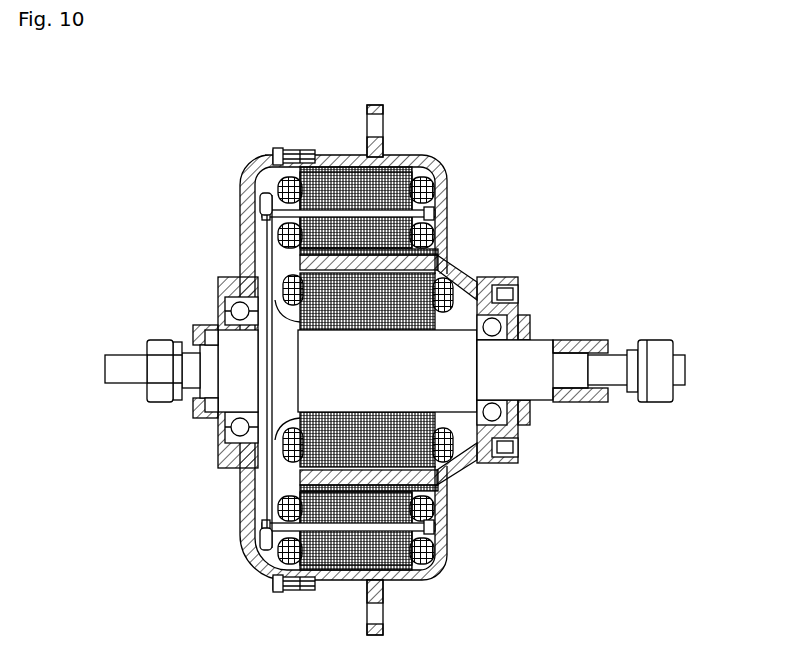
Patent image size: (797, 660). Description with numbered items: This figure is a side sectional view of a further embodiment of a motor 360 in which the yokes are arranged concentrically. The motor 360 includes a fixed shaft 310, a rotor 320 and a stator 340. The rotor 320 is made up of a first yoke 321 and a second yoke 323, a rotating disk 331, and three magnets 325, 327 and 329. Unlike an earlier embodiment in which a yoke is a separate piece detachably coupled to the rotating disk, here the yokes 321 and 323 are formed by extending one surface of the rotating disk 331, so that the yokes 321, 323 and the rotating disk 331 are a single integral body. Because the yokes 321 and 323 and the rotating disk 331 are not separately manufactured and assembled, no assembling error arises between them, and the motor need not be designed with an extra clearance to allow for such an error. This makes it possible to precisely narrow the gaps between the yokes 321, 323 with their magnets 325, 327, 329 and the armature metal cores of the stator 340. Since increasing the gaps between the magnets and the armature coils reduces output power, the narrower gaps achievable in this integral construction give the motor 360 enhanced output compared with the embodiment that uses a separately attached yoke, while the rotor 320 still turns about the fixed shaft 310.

The motor 360 is at (394, 353).
The fixed shaft 310 is at (680, 370).
The rotor 320 is at (446, 557).
The yoke 321 is at (366, 582).
The yoke 323 is at (430, 247).
The magnet 325 is at (425, 574).
The magnet 327 is at (441, 487).
The magnet 329 is at (454, 470).
The rotating disk 331 is at (446, 518).
The stator 340 is at (266, 556).